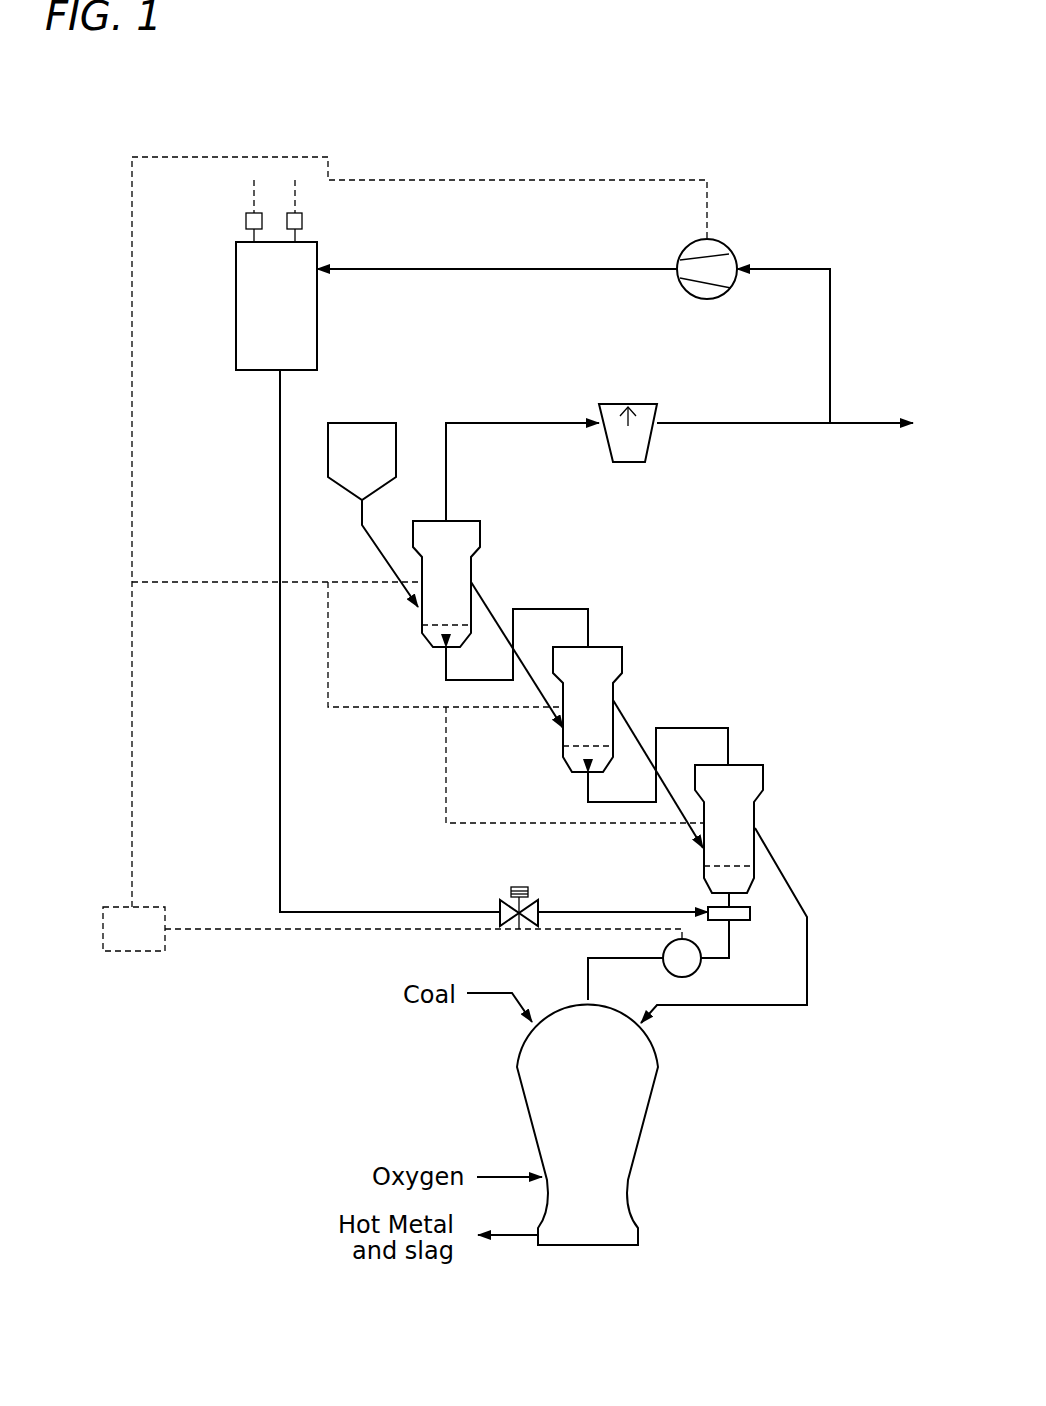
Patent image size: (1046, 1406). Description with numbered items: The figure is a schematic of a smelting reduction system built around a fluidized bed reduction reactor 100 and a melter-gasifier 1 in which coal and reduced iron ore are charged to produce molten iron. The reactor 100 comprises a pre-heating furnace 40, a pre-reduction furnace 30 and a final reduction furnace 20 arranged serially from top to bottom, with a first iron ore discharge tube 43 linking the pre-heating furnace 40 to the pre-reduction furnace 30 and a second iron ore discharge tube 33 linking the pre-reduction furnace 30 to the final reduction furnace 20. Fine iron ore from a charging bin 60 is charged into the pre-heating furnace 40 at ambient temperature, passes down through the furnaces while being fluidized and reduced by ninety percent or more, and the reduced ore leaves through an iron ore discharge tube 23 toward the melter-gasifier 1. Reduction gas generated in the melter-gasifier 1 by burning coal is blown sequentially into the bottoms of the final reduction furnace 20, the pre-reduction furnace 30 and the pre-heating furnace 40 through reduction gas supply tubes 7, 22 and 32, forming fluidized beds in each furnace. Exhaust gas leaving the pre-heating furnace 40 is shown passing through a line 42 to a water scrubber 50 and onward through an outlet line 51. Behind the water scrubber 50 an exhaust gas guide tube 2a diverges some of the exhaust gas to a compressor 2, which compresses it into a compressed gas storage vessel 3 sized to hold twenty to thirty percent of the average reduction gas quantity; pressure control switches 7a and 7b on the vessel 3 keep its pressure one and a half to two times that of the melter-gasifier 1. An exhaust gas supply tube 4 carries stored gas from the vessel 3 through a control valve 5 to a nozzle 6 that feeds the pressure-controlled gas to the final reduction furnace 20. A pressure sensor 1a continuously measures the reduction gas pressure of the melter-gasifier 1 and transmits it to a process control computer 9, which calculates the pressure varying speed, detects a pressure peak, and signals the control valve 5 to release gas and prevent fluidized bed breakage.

The melter-gasifier 1 is at (652, 1095).
The pressure sensor 1a is at (699, 972).
The compressor 2 is at (721, 243).
The exhaust gas guide tube 2a is at (830, 300).
The compressed gas storage vessel 3 is at (236, 320).
The exhaust gas supply tube 4 is at (280, 662).
The control valve 5 is at (510, 893).
The nozzle 6 is at (749, 922).
The reduction gas supply tube 7 is at (726, 901).
The pressure control switch 7a is at (246, 221).
The pressure control switch 7b is at (302, 222).
The process control computer 9 is at (134, 929).
The final reduction furnace 20 is at (763, 784).
The reduction gas supply tube 22 is at (715, 728).
The iron ore discharge tube 23 is at (811, 938).
The pre-reduction furnace 30 is at (622, 661).
The reduction gas supply tube 32 is at (566, 609).
The second iron ore discharge tube 33 is at (633, 732).
The pre-heating furnace 40 is at (480, 537).
The exhaust gas pipe 42 is at (520, 423).
The first iron ore discharge tube 43 is at (491, 609).
The water scrubber 50 is at (640, 404).
The exhaust gas pipe 51 is at (740, 423).
The charging bin 60 is at (396, 460).
The fluidized bed reduction reactor 100 is at (758, 648).